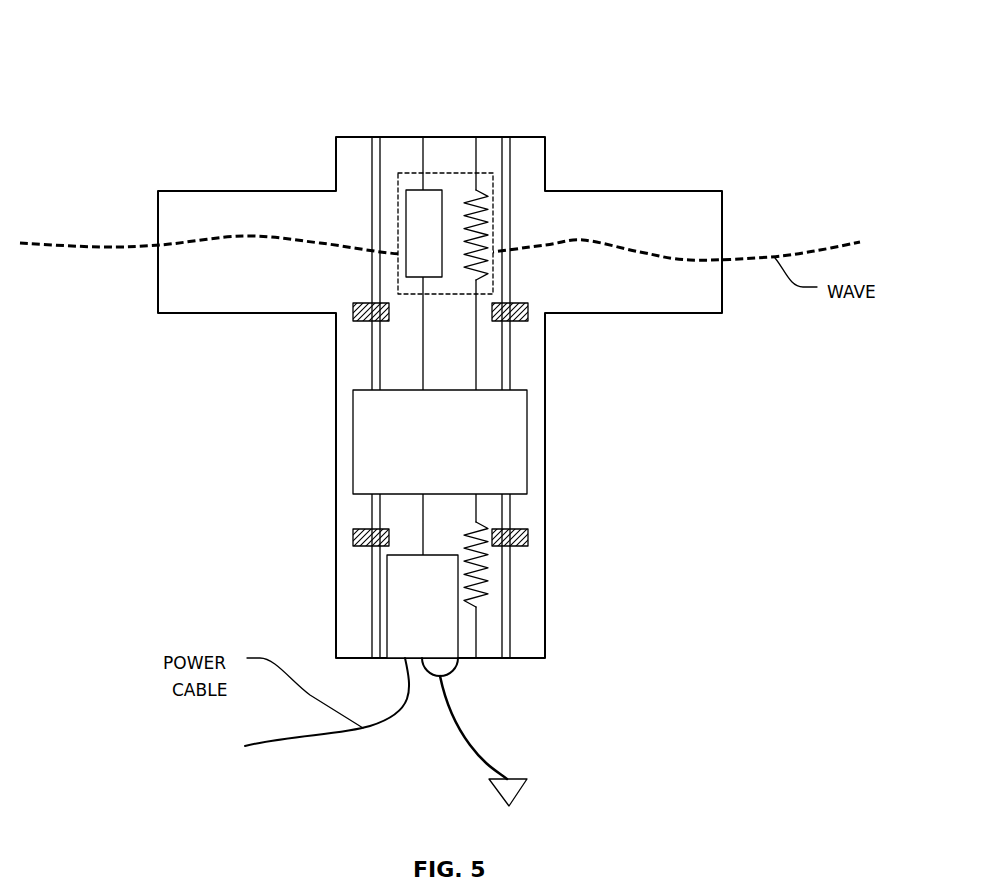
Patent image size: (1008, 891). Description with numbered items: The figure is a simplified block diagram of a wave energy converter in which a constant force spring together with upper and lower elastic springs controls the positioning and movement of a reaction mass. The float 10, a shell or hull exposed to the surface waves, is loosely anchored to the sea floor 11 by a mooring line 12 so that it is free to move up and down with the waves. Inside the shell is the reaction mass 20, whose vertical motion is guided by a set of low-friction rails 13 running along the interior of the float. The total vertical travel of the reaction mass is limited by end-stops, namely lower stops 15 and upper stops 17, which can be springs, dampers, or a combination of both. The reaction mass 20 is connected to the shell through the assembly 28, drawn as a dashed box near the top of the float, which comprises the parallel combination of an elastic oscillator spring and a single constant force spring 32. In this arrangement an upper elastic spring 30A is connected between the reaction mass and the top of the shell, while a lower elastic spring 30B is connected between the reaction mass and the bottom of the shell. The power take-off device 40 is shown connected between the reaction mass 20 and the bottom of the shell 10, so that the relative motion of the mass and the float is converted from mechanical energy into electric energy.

The float 10 is at (651, 209).
The sea floor 11 is at (510, 790).
The mooring line 12 is at (453, 712).
The rails 13 is at (368, 367).
The lower stops 15 is at (353, 538).
The upper stops 17 is at (353, 313).
The reaction mass 20 is at (527, 442).
The assembly 28 is at (443, 173).
The elastic spring 30A is at (480, 220).
The elastic spring 30B is at (477, 575).
The constant force spring 32 is at (423, 233).
The power take-off device 40 is at (458, 633).